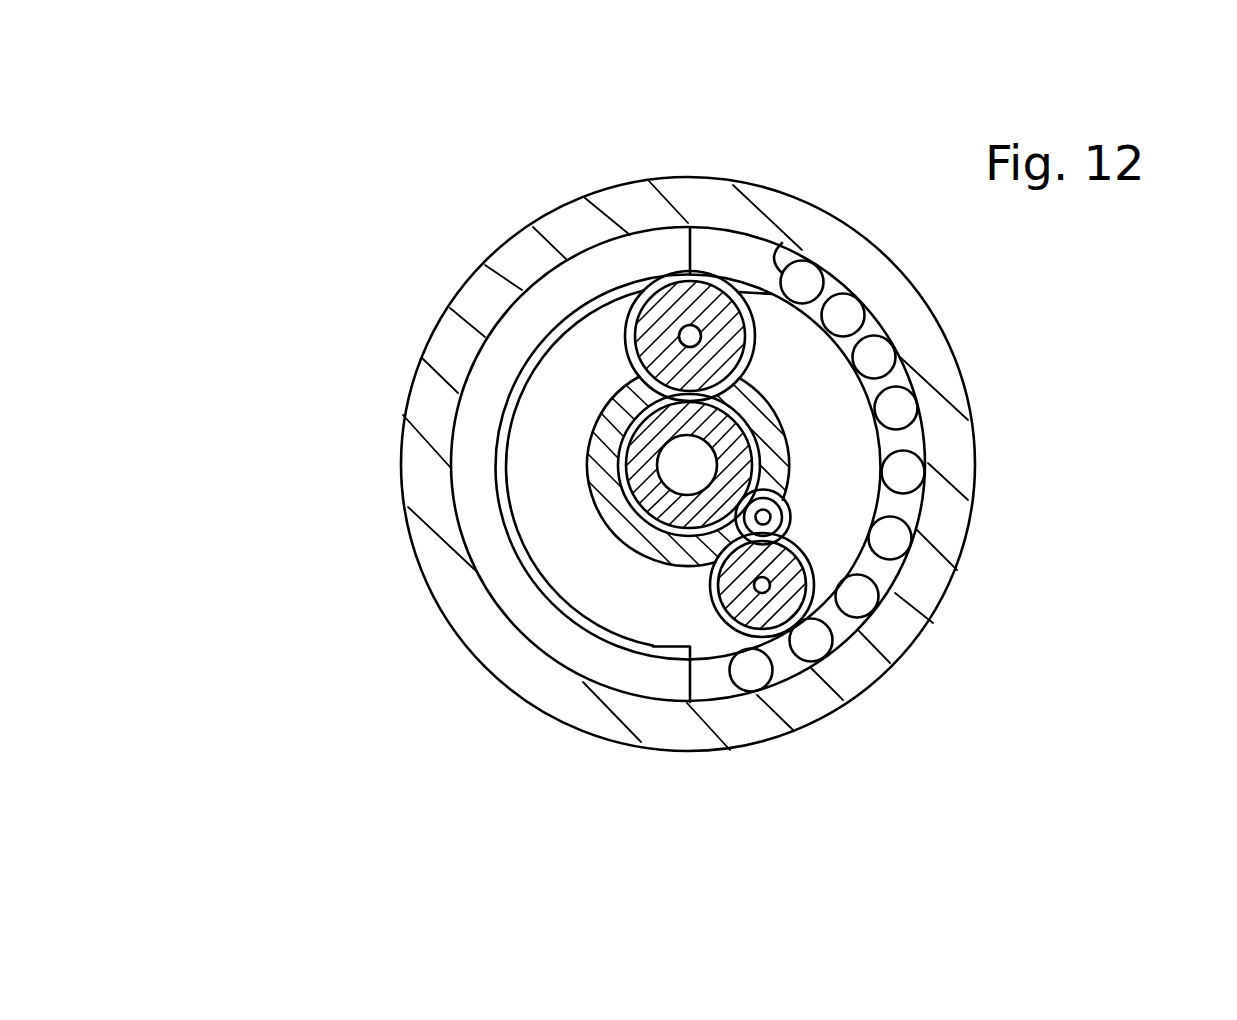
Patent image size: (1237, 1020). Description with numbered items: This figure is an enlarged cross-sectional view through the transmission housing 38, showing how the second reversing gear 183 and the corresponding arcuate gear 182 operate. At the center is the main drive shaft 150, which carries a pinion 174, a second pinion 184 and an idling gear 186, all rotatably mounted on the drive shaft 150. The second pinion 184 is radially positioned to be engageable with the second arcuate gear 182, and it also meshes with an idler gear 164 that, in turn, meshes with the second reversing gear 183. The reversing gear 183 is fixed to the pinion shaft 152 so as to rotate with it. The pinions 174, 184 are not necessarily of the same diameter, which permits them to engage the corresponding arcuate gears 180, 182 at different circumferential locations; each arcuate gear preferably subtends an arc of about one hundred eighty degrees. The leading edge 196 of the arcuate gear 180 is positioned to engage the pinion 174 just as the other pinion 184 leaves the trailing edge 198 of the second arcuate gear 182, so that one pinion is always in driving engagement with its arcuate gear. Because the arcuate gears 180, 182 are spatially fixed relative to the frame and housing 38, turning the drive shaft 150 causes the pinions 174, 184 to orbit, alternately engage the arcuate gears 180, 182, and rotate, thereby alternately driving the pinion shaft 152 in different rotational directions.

The housing 38 is at (487, 293).
The drive shaft 150 is at (653, 610).
The pinion shaft 152 is at (683, 467).
The idler gear 164 is at (810, 640).
The pinion 174 is at (667, 307).
The arcuate gear 180 is at (747, 253).
The second arcuate gear 182 is at (470, 453).
The second reversing gear 183 is at (663, 505).
The second pinion 184 is at (780, 578).
The idling gear 186 is at (775, 512).
The leading edge 196 is at (768, 262).
The trailing edge 198 is at (683, 687).